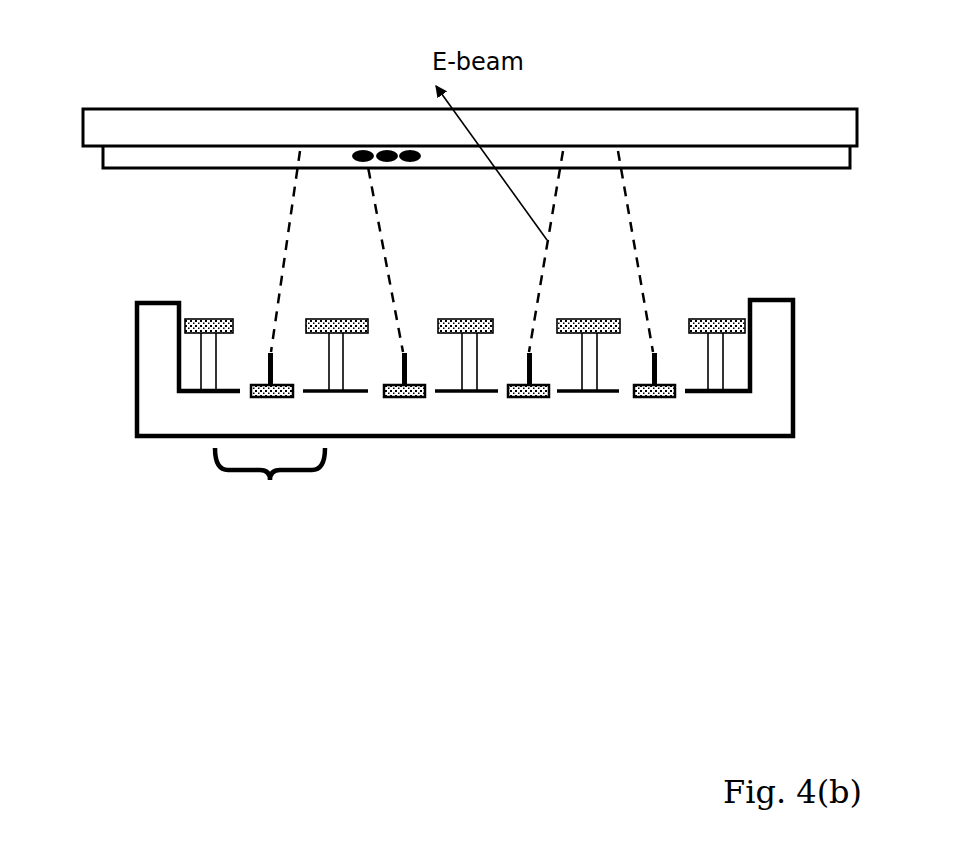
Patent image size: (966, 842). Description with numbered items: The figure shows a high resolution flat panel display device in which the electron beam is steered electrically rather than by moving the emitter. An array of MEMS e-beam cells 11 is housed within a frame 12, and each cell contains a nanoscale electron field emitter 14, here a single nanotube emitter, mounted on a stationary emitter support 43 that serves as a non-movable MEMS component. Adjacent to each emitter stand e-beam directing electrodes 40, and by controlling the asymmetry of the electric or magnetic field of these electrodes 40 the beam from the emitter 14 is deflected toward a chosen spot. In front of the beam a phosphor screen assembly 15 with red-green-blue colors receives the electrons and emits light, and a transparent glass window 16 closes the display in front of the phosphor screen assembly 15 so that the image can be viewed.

The MEMS cell 11 is at (277, 517).
The frame 12 is at (780, 400).
The nanoscale electron field emitter 14 is at (463, 493).
The phosphor screen assembly 15 is at (335, 153).
The transparent glass window 16 is at (662, 118).
The e-beam directing electrode 40 is at (460, 318).
The stationary emitter support 43 is at (395, 398).